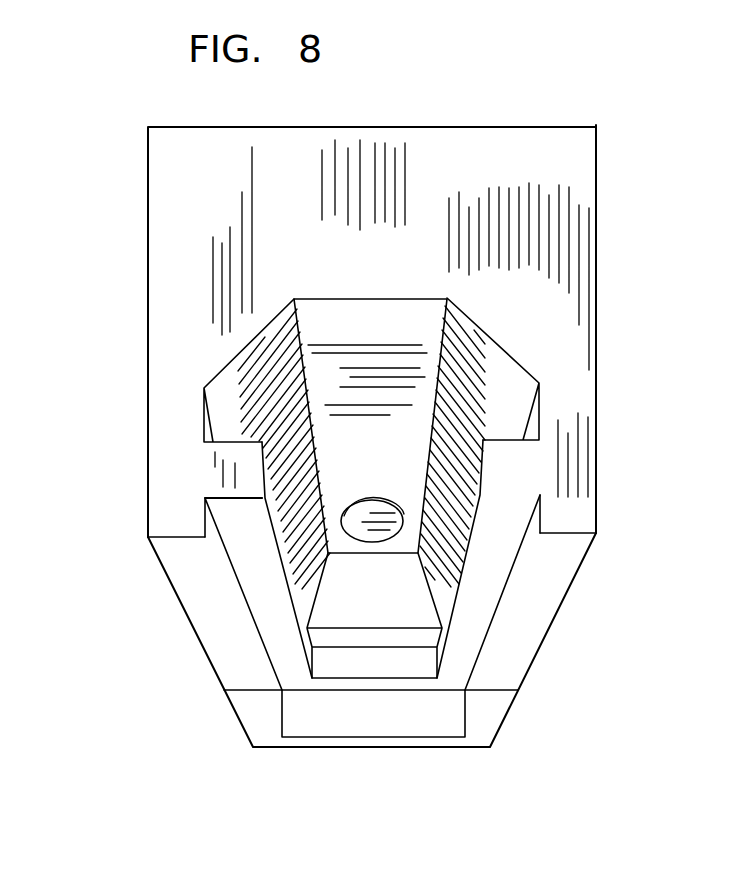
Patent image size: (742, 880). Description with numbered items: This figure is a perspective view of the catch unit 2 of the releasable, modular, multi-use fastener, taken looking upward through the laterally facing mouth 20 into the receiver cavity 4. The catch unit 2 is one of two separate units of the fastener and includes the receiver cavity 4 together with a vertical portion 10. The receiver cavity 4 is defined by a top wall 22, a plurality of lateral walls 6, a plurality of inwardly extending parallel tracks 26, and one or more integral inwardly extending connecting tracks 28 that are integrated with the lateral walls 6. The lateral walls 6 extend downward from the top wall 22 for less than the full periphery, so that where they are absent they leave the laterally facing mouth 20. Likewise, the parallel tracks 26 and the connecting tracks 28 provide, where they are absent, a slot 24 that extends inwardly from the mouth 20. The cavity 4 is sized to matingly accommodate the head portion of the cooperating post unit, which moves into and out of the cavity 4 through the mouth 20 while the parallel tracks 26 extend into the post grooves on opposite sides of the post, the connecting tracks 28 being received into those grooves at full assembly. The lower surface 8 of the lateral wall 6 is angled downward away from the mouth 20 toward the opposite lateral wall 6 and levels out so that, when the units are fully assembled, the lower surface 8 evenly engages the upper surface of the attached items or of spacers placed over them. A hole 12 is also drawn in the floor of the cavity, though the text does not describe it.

The catch unit 2 is at (479, 86).
The receiver cavity 4 is at (472, 390).
The lateral walls 6 is at (597, 344).
The lower surface 8 is at (558, 634).
The vertical portion 10 is at (190, 258).
The hole 12 is at (396, 520).
The laterally facing mouth 20 is at (213, 432).
The top wall 22 is at (396, 345).
The slot 24 is at (273, 526).
The parallel tracks 26 is at (517, 477).
The connecting tracks 28 is at (392, 678).